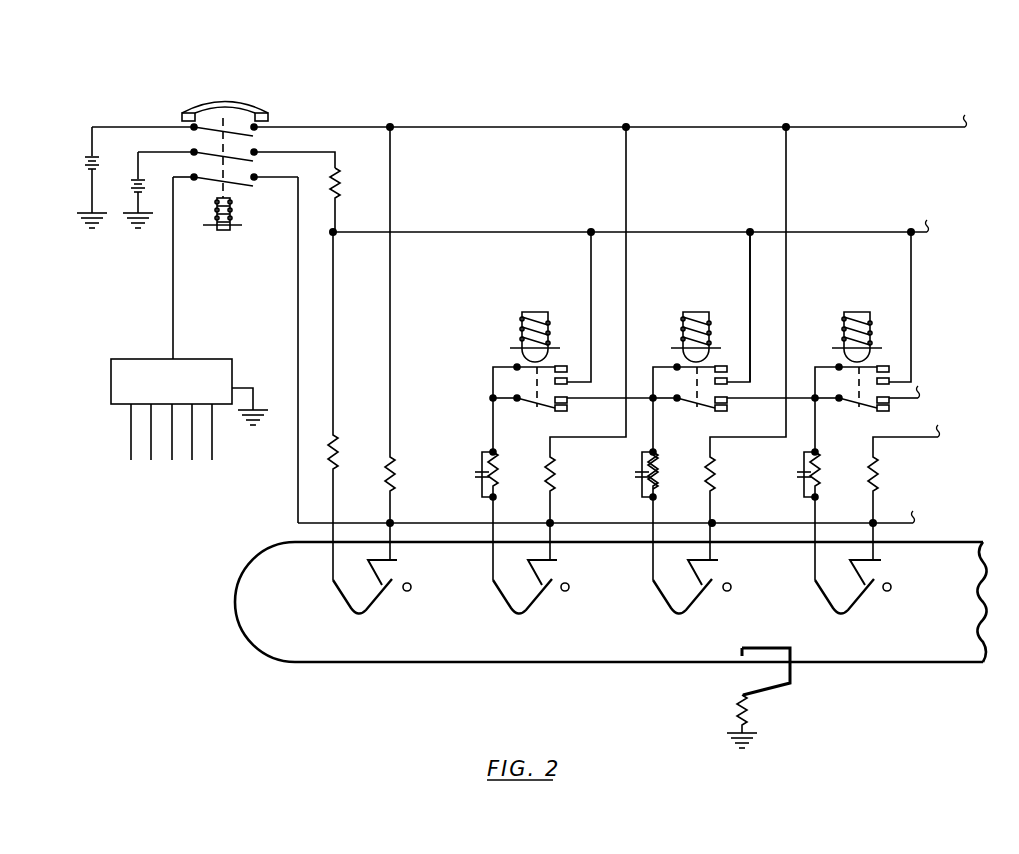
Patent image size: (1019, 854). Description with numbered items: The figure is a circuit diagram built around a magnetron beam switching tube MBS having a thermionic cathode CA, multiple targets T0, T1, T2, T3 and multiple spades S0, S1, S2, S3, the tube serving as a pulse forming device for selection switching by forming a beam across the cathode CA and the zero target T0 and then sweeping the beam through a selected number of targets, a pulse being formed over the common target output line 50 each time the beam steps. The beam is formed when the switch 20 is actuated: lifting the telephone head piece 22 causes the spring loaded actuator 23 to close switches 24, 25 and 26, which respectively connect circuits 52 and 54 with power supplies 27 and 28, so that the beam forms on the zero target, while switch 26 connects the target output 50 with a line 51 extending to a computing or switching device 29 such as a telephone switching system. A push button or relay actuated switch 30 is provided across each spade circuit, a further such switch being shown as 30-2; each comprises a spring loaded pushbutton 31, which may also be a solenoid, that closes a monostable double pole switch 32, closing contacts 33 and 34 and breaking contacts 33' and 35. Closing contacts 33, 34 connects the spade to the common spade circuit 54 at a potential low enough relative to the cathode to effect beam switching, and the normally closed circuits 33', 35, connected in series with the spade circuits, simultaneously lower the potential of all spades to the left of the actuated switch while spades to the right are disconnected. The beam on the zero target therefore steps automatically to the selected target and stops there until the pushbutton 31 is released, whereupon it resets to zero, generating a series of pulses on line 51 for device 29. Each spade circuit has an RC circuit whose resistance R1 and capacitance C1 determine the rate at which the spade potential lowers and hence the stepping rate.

The switch 20 is at (245, 127).
The telephone head piece 22 is at (258, 111).
The spring loaded actuator 23 is at (218, 127).
The switch 24 is at (268, 129).
The switch 25 is at (262, 155).
The switch 26 is at (256, 186).
The power supply 27 is at (84, 161).
The power supply 28 is at (133, 183).
The computing or switching device 29 is at (143, 358).
The push button or relay actuated switch 30 is at (566, 321).
The push button or relay actuated switch 30-2 is at (730, 338).
The spring loaded pushbutton 31 is at (537, 312).
The monostable double pole switch 32 is at (692, 385).
The contact 33 is at (731, 308).
The contact 33' is at (693, 421).
The contact 34 is at (751, 330).
The contact 35 is at (735, 406).
The common target output line 50 is at (298, 318).
The line 51 is at (173, 313).
The circuit 52 is at (394, 125).
The common spade circuit 54 is at (447, 232).
The capacitance C1 is at (640, 474).
The resistance R1 is at (656, 476).
The spade S0 is at (343, 599).
The spade S1 is at (503, 599).
The spade S2 is at (670, 599).
The spade S3 is at (833, 599).
The zero target T0 is at (400, 561).
The target T1 is at (560, 561).
The target T2 is at (721, 561).
The target T3 is at (884, 561).
The thermionic cathode CA is at (765, 700).
The magnetron beam switching tube MBS is at (918, 663).